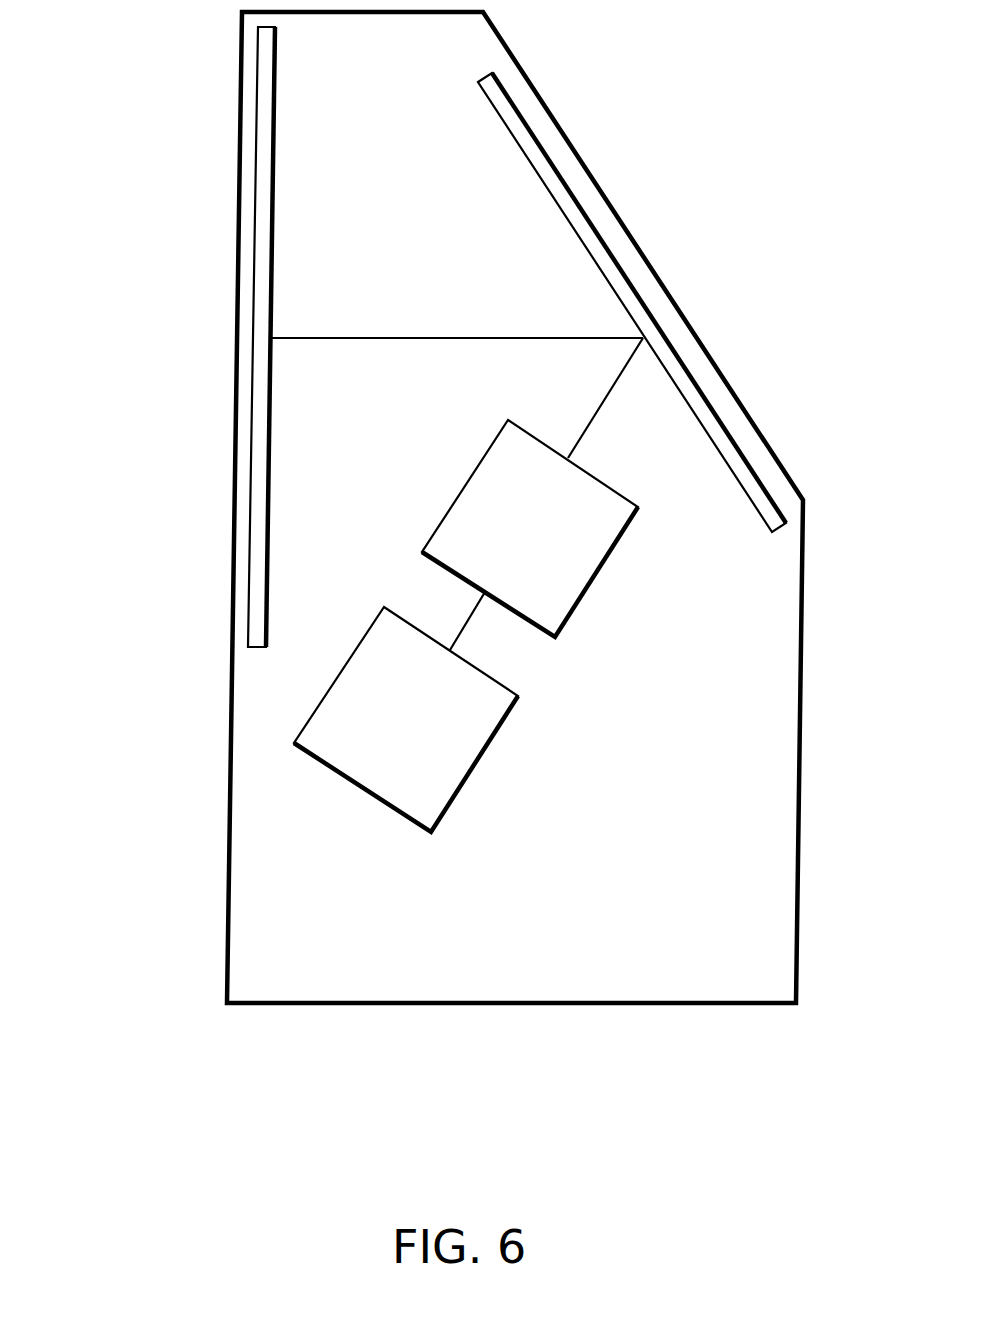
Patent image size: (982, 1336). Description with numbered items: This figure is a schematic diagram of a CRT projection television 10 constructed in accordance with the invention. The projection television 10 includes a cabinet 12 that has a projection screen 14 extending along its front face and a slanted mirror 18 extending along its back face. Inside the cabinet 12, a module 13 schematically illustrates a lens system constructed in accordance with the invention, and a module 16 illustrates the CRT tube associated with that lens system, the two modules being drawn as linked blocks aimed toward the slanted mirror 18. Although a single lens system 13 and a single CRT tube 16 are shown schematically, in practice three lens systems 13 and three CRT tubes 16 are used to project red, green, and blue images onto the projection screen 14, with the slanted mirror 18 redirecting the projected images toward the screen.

The CRT projection television 10 is at (132, 596).
The cabinet 12 is at (800, 713).
The lens system 13 is at (595, 577).
The projection screen 14 is at (273, 172).
The CRT tube 16 is at (478, 763).
The slanted mirror 18 is at (540, 173).